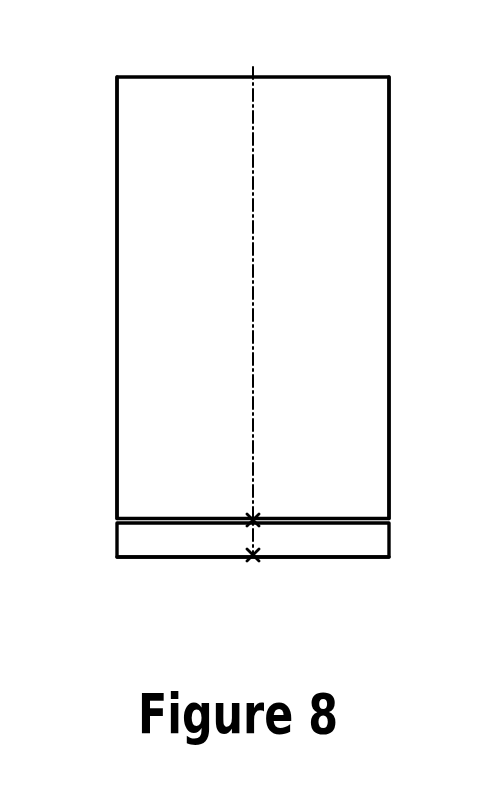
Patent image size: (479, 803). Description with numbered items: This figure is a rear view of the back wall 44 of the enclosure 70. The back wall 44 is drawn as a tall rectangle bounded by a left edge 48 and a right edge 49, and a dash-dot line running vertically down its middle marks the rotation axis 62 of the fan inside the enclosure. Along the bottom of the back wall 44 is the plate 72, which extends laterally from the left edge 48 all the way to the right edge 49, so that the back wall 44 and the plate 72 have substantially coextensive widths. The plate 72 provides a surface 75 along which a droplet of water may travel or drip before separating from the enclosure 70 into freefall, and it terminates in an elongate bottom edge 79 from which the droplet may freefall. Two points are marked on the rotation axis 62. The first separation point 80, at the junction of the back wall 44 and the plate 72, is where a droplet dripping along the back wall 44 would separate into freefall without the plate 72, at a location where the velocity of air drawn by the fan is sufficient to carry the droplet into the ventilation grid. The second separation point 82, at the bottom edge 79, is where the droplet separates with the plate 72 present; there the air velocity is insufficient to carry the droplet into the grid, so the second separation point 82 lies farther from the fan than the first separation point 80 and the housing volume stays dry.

The enclosure 70 is at (251, 318).
The back wall 44 is at (312, 97).
The left edge 48 is at (117, 295).
The right edge 49 is at (390, 277).
The rotation axis 62 is at (253, 342).
The plate 72 is at (216, 551).
The surface 75 is at (132, 547).
The bottom edge 79 is at (330, 553).
The first separation point 80 is at (250, 525).
The second separation point 82 is at (253, 560).